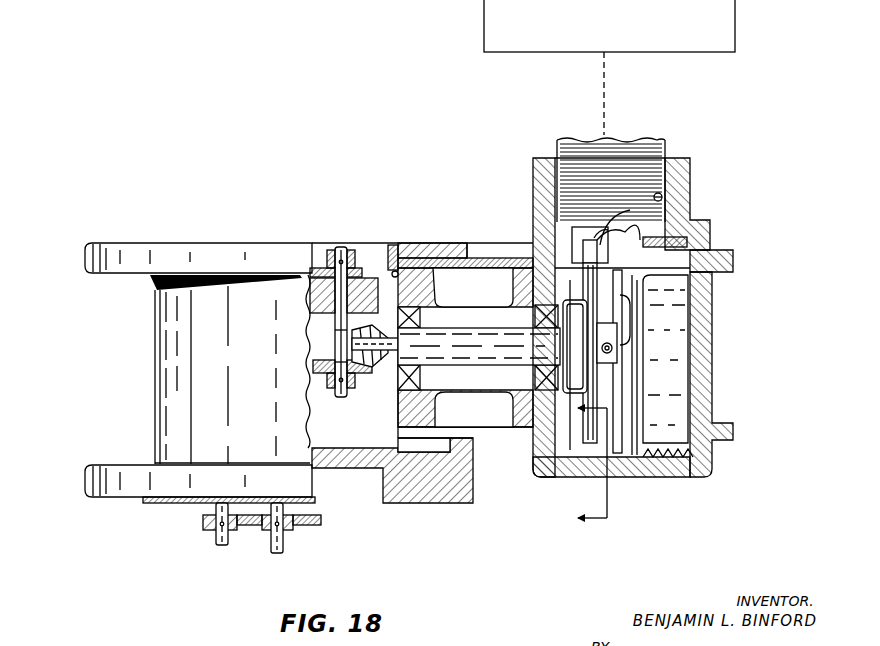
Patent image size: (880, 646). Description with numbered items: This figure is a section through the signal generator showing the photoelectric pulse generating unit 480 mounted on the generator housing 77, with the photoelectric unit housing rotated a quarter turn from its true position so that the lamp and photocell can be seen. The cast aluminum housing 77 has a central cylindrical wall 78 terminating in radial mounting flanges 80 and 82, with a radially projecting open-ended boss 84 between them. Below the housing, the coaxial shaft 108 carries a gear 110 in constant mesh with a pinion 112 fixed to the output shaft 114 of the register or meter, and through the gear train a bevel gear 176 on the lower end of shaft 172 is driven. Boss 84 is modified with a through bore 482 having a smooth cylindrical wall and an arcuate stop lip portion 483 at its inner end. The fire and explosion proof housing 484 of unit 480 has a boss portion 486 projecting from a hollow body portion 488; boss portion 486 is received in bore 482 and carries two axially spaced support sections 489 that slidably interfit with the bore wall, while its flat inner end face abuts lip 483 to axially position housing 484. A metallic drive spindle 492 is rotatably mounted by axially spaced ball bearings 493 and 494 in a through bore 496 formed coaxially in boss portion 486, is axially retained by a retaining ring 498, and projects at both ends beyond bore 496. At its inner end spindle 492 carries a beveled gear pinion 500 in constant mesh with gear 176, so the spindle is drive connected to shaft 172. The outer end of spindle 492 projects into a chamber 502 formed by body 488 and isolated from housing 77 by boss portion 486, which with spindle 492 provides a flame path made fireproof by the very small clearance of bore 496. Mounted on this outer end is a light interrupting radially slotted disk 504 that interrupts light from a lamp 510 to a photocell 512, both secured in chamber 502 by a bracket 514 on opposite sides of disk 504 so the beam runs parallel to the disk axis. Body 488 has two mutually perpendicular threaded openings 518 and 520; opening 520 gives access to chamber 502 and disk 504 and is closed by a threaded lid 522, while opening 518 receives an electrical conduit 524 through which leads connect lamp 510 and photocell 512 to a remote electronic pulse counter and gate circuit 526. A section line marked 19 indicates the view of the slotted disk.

The electronic pulse counter and gate circuit 526 is at (484, 28).
The radial mounting flange 82 is at (96, 250).
The central cylindrical wall 78 is at (170, 320).
The housing 77 is at (152, 354).
The radial mounting flange 80 is at (104, 494).
The gear 110 is at (302, 518).
The pinion 112 is at (206, 518).
The output shaft 114 is at (217, 540).
The shaft 108 is at (284, 545).
The boss 84 is at (453, 257).
The stop lip portion 483 is at (400, 316).
The through bore 482 is at (447, 275).
The boss portion 486 is at (455, 316).
The through bore 496 is at (487, 362).
The support sections 489 is at (418, 282).
The ball bearing 493 is at (396, 320).
The bevel gear 176 is at (330, 372).
The retaining ring 498 is at (358, 376).
The shaft 172 is at (340, 347).
The beveled gear pinion 500 is at (375, 336).
The drive spindle 492 is at (442, 356).
The housing 484 is at (535, 443).
The hollow body portion 488 is at (653, 477).
The photoelectric pulse generating unit 480 is at (720, 224).
The threaded opening 520 is at (734, 258).
The threaded lid 522 is at (705, 308).
The electrical conduit 524 is at (665, 145).
The threaded opening 518 is at (664, 199).
The lamp 510 is at (574, 246).
The bracket 514 is at (578, 226).
The light interrupting radially slotted disk 504 is at (596, 436).
The photocell 512 is at (600, 243).
The ball bearing 494 is at (553, 378).
The chamber 502 is at (578, 437).
The section line 19- 19 is at (576, 467).